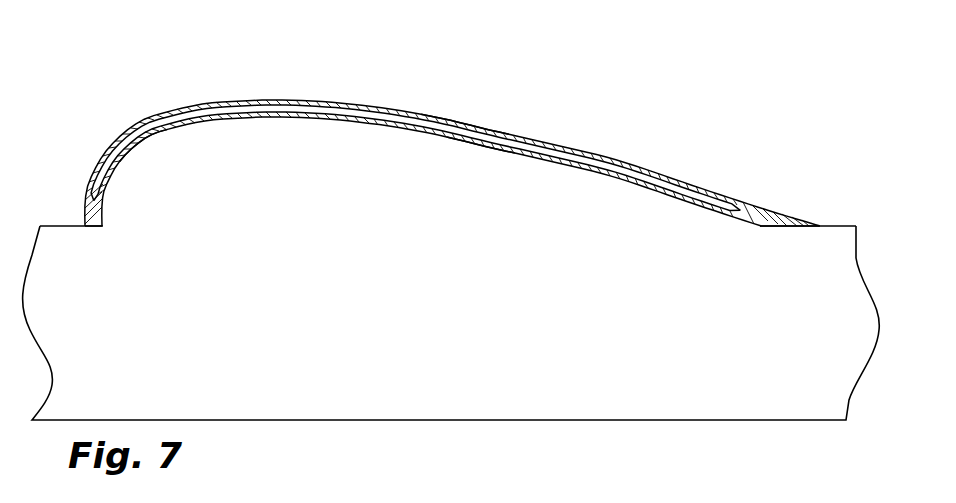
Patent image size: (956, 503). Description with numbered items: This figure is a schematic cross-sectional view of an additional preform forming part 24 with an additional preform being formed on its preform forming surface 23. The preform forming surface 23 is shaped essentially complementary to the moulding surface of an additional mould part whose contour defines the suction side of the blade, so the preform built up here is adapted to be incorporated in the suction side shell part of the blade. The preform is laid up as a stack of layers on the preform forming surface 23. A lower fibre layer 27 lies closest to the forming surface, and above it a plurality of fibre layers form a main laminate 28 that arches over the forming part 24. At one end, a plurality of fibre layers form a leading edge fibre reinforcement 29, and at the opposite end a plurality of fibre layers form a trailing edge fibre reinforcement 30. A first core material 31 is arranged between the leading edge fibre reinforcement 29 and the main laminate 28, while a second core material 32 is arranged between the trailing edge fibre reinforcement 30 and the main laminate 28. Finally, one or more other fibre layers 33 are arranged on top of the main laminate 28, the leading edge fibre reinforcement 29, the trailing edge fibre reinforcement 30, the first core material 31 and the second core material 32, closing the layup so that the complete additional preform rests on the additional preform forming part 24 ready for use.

The preform forming surface 23 is at (450, 163).
The additional preform forming part 24 is at (533, 348).
The lower fibre layer 27 is at (390, 127).
The main laminate 28 is at (267, 101).
The leading edge fibre reinforcement 29 is at (102, 227).
The trailing edge fibre reinforcement 30 is at (778, 227).
The first core material 31 is at (147, 136).
The second core material 32 is at (481, 131).
The other fibre layers 33 is at (460, 118).